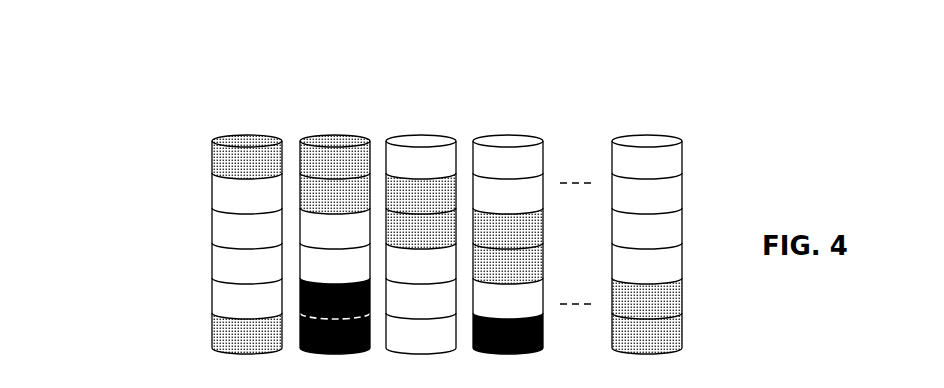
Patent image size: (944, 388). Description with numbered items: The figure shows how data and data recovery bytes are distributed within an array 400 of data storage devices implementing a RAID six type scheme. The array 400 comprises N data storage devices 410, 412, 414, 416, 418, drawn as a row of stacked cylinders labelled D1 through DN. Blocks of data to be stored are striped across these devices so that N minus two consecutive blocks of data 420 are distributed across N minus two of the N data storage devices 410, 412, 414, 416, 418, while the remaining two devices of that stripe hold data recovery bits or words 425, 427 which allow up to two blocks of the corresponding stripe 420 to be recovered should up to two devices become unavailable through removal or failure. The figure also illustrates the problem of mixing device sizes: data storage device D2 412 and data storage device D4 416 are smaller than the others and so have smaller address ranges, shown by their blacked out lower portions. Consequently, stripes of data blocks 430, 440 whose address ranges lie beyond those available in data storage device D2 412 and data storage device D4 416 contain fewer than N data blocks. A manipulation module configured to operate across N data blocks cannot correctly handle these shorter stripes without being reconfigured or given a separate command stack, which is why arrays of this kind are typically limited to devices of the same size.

The array of data storage devices 400 is at (720, 110).
The data storage device 410 is at (234, 219).
The data storage device D2 412 is at (320, 219).
The data storage device 414 is at (421, 111).
The data storage device D4 416 is at (508, 111).
The data storage device 418 is at (646, 111).
The stripe of consecutive blocks of data 420 is at (106, 157).
The data recovery bits/words 425 is at (230, 134).
The data recovery bits/words 427 is at (318, 134).
The stripe of data blocks 430 is at (106, 295).
The stripe of data blocks 440 is at (106, 331).